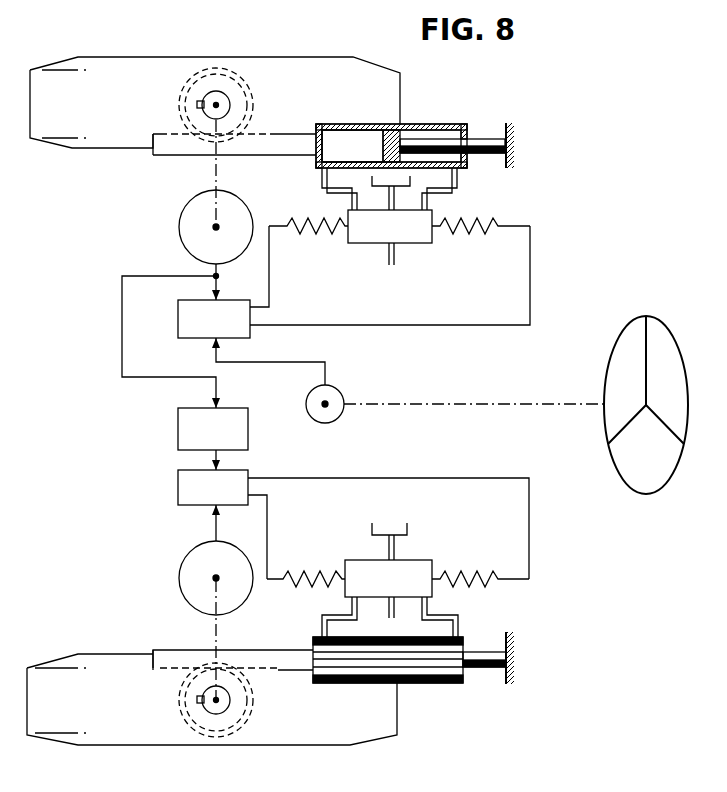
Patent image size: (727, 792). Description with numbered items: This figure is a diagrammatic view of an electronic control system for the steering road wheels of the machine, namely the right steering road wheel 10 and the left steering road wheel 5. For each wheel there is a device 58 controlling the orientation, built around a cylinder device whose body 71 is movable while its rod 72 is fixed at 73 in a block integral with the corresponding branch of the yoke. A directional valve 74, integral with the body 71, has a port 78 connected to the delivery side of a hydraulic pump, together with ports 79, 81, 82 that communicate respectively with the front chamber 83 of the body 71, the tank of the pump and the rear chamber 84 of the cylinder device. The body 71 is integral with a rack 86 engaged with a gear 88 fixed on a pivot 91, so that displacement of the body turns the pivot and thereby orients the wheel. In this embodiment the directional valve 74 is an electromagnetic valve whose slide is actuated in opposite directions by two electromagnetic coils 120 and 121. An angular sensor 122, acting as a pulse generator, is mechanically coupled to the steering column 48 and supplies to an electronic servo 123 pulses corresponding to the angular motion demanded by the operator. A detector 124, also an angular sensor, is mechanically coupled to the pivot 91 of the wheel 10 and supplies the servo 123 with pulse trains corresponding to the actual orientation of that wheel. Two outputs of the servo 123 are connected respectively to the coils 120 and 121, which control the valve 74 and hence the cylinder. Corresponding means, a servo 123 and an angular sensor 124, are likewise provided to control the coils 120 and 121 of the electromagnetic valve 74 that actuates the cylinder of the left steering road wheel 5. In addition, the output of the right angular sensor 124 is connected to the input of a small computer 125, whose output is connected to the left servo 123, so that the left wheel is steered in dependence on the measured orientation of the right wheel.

The left steering road wheel 5 is at (88, 654).
The right steering road wheel 10 is at (353, 57).
The steering column 48 is at (498, 403).
The device controlling the orientation 58 is at (467, 207).
The body 71 is at (410, 125).
The rod 72 is at (486, 140).
The fixing point 73 is at (506, 126).
The directional valve 74 is at (413, 230).
The port 78 is at (386, 262).
The port 79 is at (320, 180).
The port 81 is at (352, 196).
The port 82 is at (457, 180).
The front chamber 83 is at (350, 150).
The rear chamber 84 is at (447, 140).
The rack 86 is at (170, 133).
The gear 88 is at (247, 96).
The pivot 91 is at (217, 95).
The electromagnetic coil 120 is at (318, 235).
The electromagnetic coil 121 is at (472, 235).
The angular sensor 122 is at (340, 393).
The electronic servo 123 is at (178, 322).
The detector 124 is at (178, 227).
The small computer 125 is at (178, 430).